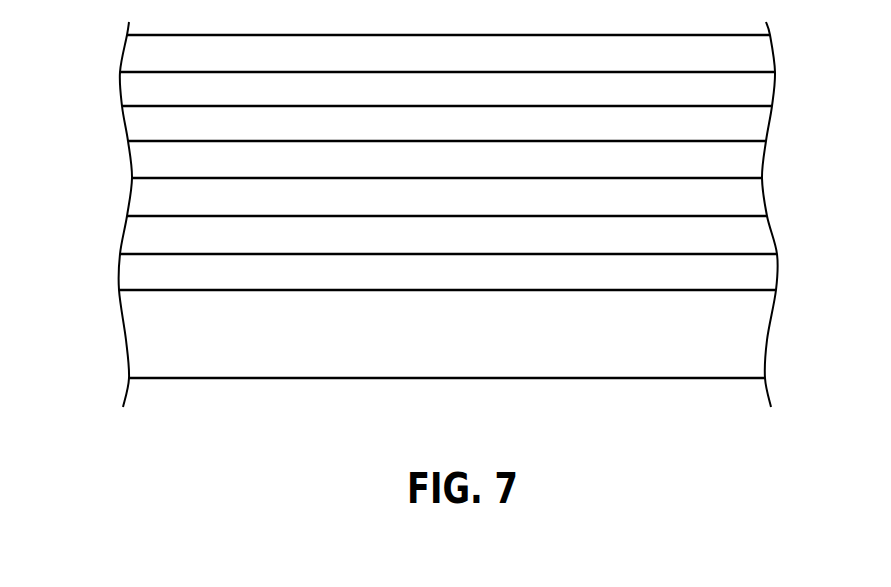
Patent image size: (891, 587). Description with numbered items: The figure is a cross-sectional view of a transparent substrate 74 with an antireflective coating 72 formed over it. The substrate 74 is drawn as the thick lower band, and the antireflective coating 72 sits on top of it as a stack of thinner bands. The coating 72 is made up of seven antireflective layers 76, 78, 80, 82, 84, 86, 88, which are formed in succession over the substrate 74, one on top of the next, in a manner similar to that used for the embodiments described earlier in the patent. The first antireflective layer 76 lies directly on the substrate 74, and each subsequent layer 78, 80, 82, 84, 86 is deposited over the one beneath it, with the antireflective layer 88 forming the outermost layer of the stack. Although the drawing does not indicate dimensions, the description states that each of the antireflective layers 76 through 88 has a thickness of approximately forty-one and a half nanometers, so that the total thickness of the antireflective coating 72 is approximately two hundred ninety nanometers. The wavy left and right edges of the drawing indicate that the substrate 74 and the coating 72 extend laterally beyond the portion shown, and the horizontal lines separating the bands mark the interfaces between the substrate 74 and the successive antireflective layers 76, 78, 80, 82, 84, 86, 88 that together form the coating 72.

The antireflective coating 72 is at (446, 163).
The transparent substrate 74 is at (97, 292).
The antireflective layer 76 is at (798, 254).
The antireflective layer 78 is at (798, 216).
The antireflective layer 80 is at (798, 178).
The antireflective layer 82 is at (798, 141).
The antireflective layer 84 is at (798, 106).
The antireflective layer 86 is at (798, 72).
The antireflective layer 88 is at (798, 35).